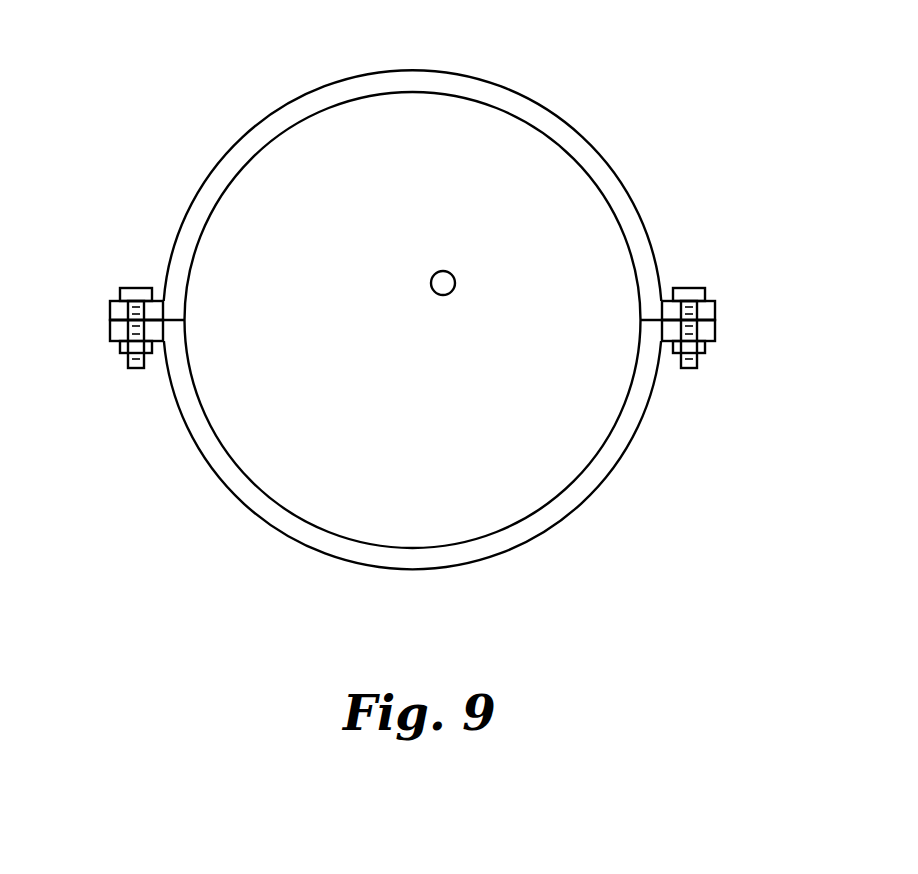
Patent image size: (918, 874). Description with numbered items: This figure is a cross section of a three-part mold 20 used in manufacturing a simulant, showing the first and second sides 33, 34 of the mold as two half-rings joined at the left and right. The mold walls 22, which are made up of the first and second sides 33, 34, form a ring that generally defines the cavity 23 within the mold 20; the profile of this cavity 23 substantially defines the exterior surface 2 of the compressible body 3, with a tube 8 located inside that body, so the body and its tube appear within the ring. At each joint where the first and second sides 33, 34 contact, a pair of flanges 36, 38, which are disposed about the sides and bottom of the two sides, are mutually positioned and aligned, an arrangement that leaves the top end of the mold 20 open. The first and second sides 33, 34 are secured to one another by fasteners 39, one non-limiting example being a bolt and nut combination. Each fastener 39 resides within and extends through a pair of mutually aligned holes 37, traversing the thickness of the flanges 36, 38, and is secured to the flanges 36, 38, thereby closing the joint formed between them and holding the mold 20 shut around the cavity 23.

The exterior surface 2 is at (565, 148).
The compressible body 3 is at (528, 437).
The tube 8 is at (430, 280).
The three-part mold 20 is at (512, 75).
The mold walls 22 is at (283, 118).
The cavity 23 is at (533, 221).
The first side 33 is at (220, 155).
The second side 34 is at (268, 525).
The flange 36 is at (110, 312).
The holes 37 is at (127, 320).
The flange 38 is at (128, 310).
The fastener 39 is at (125, 288).